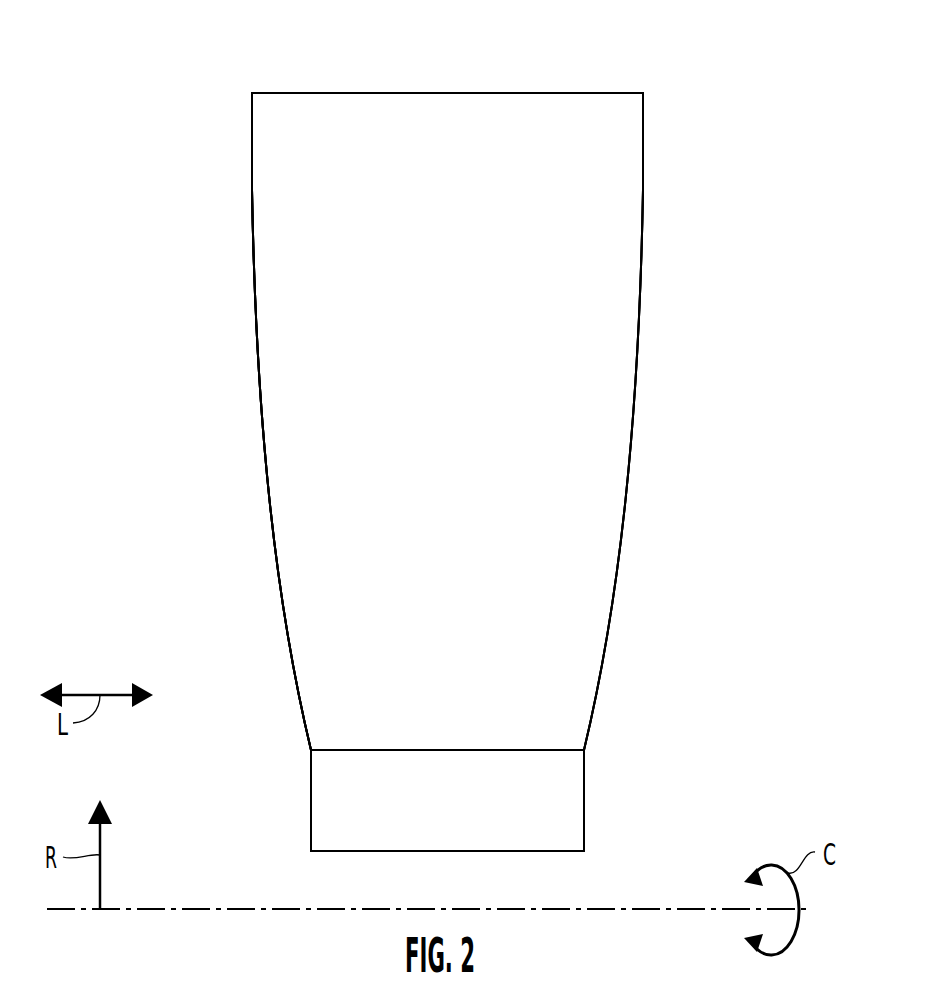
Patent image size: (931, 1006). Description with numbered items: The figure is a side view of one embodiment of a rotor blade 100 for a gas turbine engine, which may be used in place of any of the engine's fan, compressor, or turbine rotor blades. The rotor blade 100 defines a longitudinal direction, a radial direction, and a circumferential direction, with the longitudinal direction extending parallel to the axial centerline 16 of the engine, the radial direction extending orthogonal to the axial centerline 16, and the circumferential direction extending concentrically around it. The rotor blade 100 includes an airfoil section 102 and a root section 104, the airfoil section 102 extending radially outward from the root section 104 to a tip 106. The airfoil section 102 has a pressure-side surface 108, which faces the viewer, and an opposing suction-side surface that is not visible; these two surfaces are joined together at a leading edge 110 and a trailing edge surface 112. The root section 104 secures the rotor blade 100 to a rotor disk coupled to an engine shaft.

The rotor blade 100 is at (237, 66).
The airfoil section 102 is at (295, 258).
The root section 104 is at (584, 790).
The tip 106 is at (517, 93).
The pressure-side surface 108 is at (482, 364).
The leading edge 110 is at (260, 393).
The trailing edge surface 112 is at (634, 397).
The axial centerline 16 is at (218, 910).